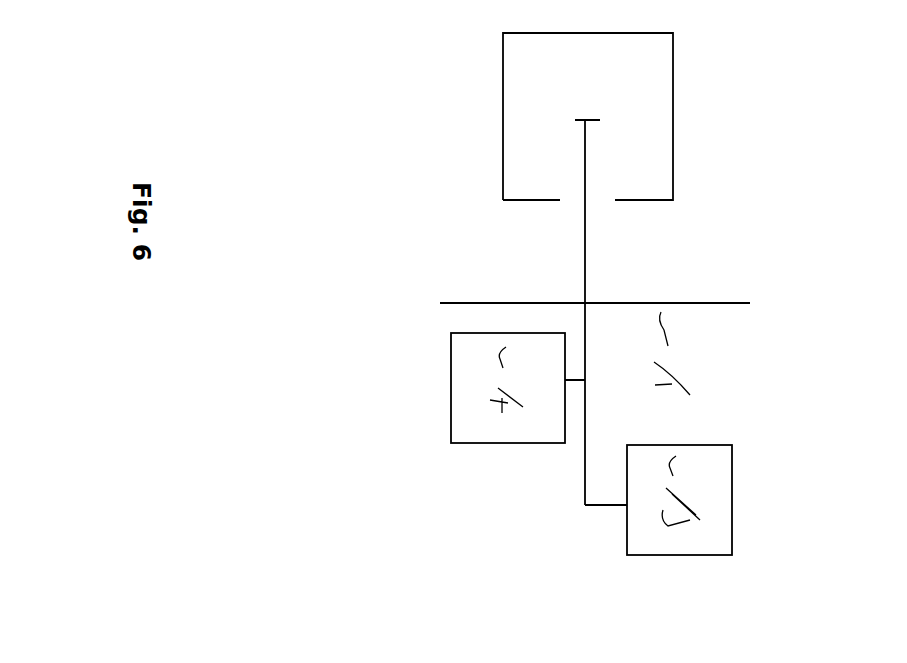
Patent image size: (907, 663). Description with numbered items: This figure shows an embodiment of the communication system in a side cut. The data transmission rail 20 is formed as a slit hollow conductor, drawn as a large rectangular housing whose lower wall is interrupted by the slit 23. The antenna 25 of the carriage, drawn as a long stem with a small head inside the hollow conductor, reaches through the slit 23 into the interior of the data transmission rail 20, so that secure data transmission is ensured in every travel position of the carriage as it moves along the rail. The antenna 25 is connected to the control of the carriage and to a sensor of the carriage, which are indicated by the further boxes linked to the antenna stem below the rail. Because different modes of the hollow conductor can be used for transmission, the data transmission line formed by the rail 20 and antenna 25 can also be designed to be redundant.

The housing 20 is at (717, 74).
The opening 23 is at (843, 240).
The shaft 25 is at (578, 143).